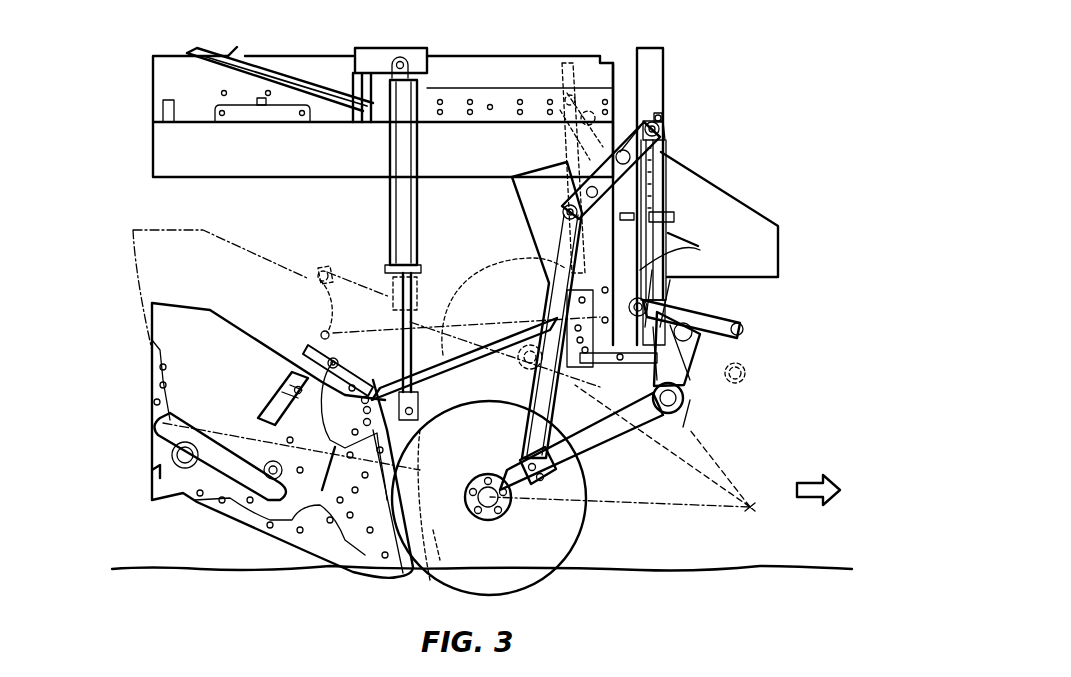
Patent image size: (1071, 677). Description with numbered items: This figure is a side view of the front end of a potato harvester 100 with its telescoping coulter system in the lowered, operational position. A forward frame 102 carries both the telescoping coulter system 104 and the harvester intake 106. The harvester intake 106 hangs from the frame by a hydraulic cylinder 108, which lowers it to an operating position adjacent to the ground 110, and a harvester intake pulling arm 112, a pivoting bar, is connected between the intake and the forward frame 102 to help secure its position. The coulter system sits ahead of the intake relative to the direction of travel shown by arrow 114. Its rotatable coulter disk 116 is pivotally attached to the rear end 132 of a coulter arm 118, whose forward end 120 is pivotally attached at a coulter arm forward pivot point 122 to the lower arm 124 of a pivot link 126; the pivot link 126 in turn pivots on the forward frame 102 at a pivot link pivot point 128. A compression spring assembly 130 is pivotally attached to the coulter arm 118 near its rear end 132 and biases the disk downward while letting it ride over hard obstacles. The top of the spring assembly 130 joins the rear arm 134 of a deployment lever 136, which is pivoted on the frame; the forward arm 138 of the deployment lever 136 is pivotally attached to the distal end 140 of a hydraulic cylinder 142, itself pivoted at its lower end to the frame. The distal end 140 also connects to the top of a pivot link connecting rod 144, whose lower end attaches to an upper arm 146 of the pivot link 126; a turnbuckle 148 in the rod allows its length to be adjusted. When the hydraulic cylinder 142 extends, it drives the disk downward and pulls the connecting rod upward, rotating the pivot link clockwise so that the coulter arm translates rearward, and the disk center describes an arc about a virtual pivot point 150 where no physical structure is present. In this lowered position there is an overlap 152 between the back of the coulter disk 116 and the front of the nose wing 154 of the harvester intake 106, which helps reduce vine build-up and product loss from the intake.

The potato harvester 100 is at (118, 346).
The forward frame 102 is at (625, 80).
The telescoping coulter system 104 is at (807, 278).
The harvester intake 106 is at (325, 430).
The hydraulic cylinder 108 is at (402, 195).
The ground 110 is at (777, 565).
The harvester intake pulling arm 112 is at (467, 367).
The arrow 114 is at (817, 477).
The coulter disk 116 is at (503, 550).
The coulter arm 118 is at (597, 458).
The forward end 120 is at (617, 428).
The coulter arm forward pivot point 122 is at (683, 427).
The lower arm 124 is at (703, 387).
The pivot link 126 is at (710, 320).
The pivot link pivot point 128 is at (720, 340).
The compression spring assembly 130 is at (553, 253).
The rear end 132 is at (557, 503).
The rear arm 134 is at (545, 192).
The deployment lever 136 is at (603, 135).
The forward arm 138 is at (640, 127).
The distal end 140 is at (668, 146).
The hydraulic cylinder 142 is at (692, 255).
The pivot link connecting rod 144 is at (700, 166).
The upper arm 146 is at (670, 272).
The turnbuckle 148 is at (705, 192).
The virtual pivot point 150 is at (748, 512).
The overlap 152 is at (423, 580).
The nose wing 154 is at (365, 520).